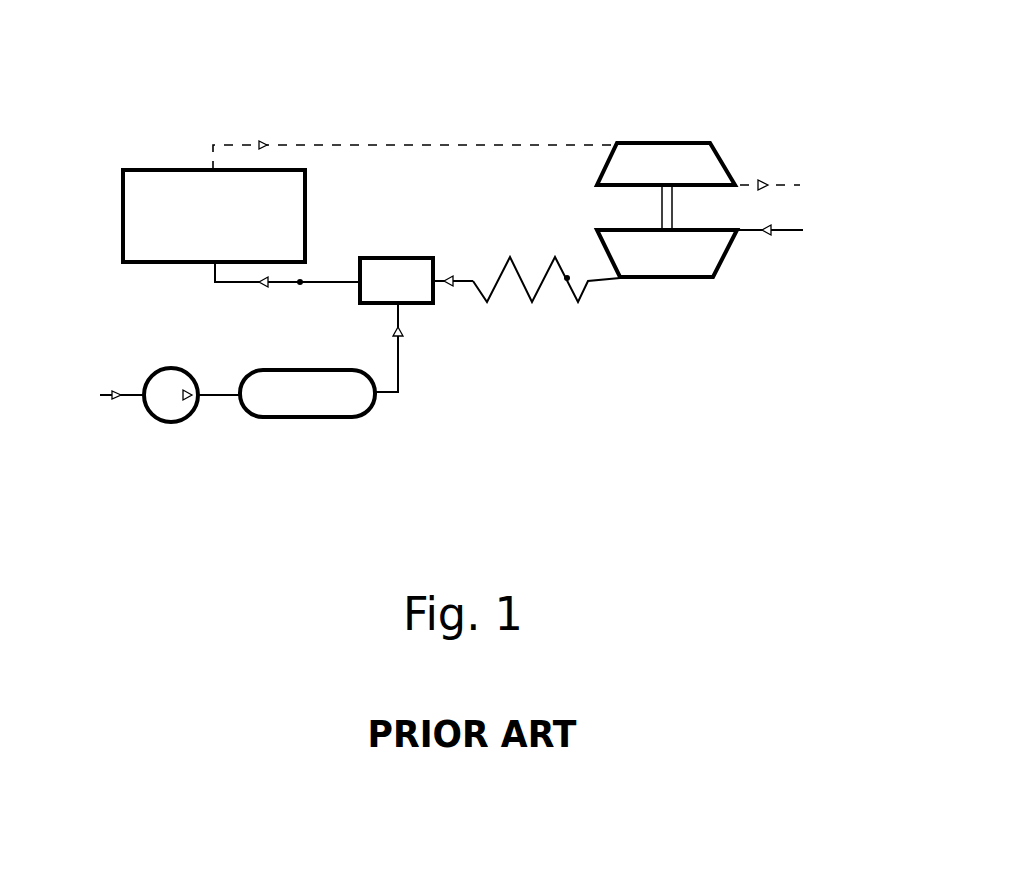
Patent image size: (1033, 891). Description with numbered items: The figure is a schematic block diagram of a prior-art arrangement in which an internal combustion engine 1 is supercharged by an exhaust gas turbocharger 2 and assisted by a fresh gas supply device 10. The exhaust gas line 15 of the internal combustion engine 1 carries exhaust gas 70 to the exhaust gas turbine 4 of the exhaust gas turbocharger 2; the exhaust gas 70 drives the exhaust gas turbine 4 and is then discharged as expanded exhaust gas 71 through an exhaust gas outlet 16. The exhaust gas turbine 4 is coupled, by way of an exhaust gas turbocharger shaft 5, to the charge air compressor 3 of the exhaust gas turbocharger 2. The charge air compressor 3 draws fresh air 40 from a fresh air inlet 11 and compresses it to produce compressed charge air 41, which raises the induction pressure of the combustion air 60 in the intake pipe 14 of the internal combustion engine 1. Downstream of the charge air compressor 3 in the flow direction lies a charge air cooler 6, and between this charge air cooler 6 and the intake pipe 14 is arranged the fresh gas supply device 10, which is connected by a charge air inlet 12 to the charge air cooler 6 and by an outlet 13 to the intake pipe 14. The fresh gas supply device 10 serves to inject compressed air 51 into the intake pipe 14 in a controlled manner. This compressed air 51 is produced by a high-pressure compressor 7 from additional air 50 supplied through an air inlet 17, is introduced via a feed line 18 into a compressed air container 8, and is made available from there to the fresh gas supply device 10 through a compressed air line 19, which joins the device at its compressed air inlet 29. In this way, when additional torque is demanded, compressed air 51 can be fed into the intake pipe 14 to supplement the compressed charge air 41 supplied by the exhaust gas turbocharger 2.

The internal combustion engine 1 is at (206, 190).
The exhaust gas turbocharger 2 is at (656, 108).
The charge air compressor 3 is at (643, 253).
The exhaust gas turbine 4 is at (647, 157).
The exhaust gas turbocharger shaft 5 is at (591, 155).
The charge air cooler 6 is at (567, 278).
The high-pressure compressor 7 is at (162, 400).
The compressed air container 8 is at (322, 393).
The fresh gas supply device 10 is at (445, 345).
The fresh air inlet 11 is at (770, 294).
The charge air inlet 12 is at (495, 339).
The outlet 13 is at (358, 283).
The intake pipe 14 is at (287, 180).
The exhaust gas line 15 is at (442, 145).
The exhaust gas outlet 16 is at (770, 129).
The air inlet 17 is at (132, 397).
The pump outlet line 18 is at (215, 397).
The compressed air line 19 is at (402, 383).
The compressed air inlet 29 is at (395, 305).
The fresh air 40 is at (767, 236).
The compressed charge air 41 is at (450, 278).
The additional air 50 is at (114, 398).
The compressed air 51 is at (403, 337).
The combustion air 60 is at (266, 285).
The exhaust gas 70 is at (262, 143).
The expanded exhaust gas 71 is at (756, 183).